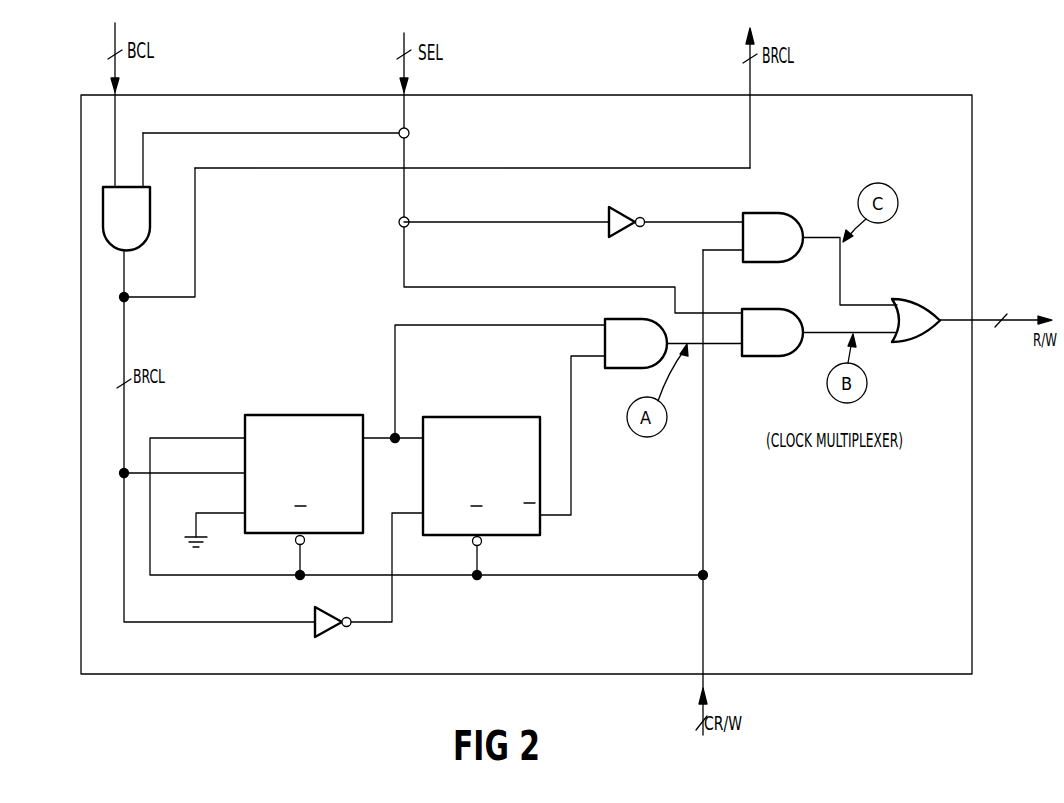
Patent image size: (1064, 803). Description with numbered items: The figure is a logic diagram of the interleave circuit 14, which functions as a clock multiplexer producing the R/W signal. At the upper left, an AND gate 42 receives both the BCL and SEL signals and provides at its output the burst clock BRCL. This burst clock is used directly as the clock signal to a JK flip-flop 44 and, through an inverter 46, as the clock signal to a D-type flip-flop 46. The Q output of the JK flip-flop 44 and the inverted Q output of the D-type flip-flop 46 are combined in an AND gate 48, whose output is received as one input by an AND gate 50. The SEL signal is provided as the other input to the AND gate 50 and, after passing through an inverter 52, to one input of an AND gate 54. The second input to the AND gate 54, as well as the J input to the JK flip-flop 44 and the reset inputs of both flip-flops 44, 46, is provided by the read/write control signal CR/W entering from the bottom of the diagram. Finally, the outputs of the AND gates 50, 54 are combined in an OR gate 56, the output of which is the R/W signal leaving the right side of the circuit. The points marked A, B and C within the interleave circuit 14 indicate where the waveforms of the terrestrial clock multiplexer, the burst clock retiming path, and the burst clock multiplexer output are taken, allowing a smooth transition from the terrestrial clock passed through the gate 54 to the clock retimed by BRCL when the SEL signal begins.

The interleave circuit 14 is at (81, 158).
The AND gate 42 is at (118, 240).
The JK flip-flop 44 is at (303, 423).
The inverter and D-type flip-flop 46 is at (471, 428).
The AND gate 48 is at (623, 362).
The AND gate 50 is at (760, 350).
The inverter 52 is at (624, 215).
The AND gate 54 is at (772, 218).
The OR gate 56 is at (910, 335).